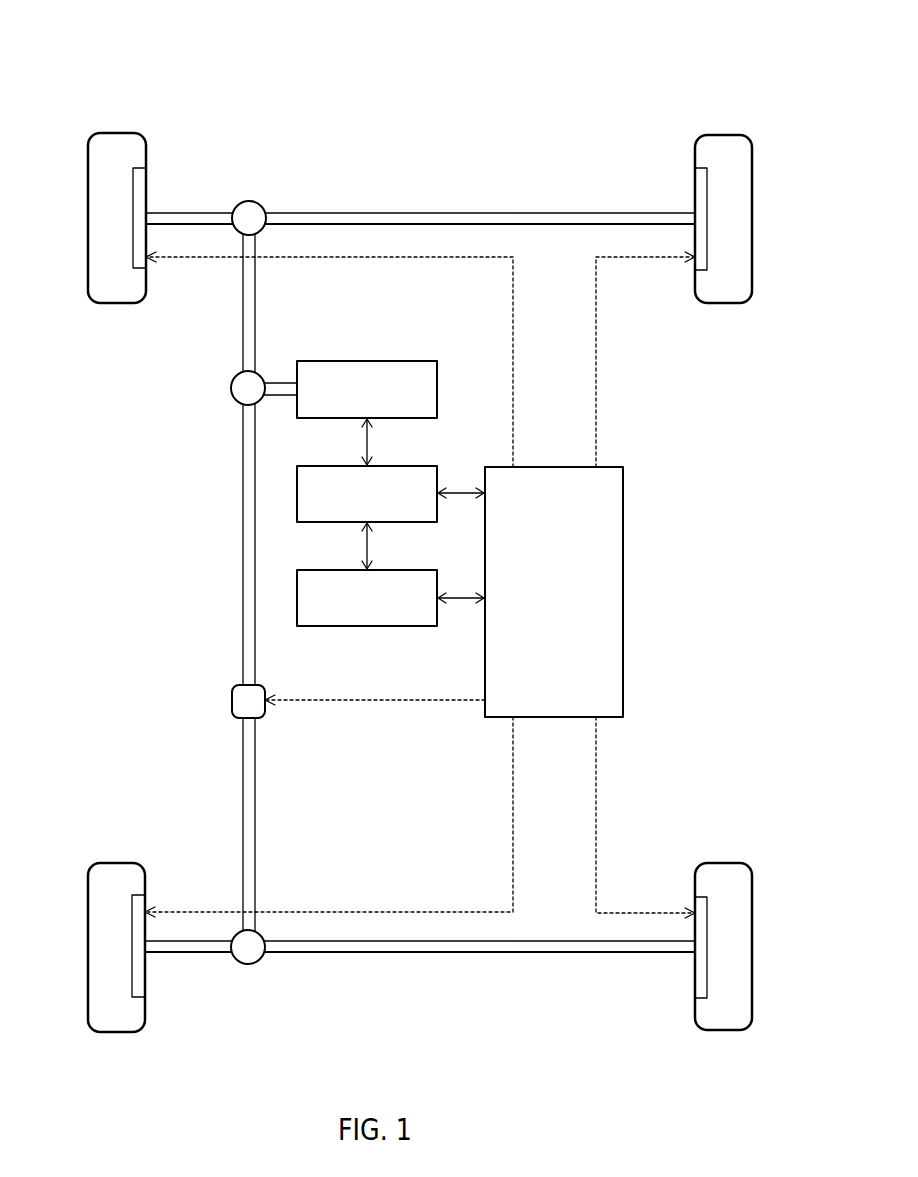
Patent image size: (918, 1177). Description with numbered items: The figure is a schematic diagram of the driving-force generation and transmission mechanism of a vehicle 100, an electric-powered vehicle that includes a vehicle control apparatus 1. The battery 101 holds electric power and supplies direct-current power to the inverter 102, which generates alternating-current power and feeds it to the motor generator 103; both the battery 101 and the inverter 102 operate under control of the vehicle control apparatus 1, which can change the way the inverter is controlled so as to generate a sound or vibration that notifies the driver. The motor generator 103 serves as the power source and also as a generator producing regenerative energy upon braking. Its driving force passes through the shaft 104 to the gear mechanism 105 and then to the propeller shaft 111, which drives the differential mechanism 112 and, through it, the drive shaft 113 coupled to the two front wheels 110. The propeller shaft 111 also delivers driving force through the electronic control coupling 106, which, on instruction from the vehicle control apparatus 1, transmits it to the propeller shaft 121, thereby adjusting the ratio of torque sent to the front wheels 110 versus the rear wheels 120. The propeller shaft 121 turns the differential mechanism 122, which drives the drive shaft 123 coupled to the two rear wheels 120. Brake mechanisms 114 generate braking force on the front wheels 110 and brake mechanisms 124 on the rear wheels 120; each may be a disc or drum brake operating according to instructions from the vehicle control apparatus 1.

The vehicle 100 is at (569, 49).
The vehicle control apparatus 1 is at (623, 590).
The battery 101 is at (383, 570).
The inverter 102 is at (383, 465).
The motor generator 103 is at (383, 360).
The shaft 104 is at (285, 382).
The gear mechanism 105 is at (236, 400).
The electronic control coupling 106 is at (232, 701).
The front wheels 110 is at (116, 133).
The propeller shaft 111 is at (243, 303).
The differential mechanism 112 is at (250, 201).
The drive shaft 113 is at (447, 212).
The brake mechanisms 114 is at (138, 262).
The rear wheels 120 is at (117, 1032).
The propeller shaft 121 is at (256, 775).
The differential mechanism 122 is at (249, 965).
The drive shaft 123 is at (449, 955).
The brake mechanisms 124 is at (138, 897).